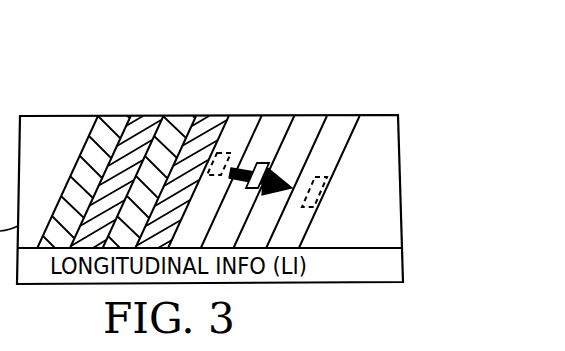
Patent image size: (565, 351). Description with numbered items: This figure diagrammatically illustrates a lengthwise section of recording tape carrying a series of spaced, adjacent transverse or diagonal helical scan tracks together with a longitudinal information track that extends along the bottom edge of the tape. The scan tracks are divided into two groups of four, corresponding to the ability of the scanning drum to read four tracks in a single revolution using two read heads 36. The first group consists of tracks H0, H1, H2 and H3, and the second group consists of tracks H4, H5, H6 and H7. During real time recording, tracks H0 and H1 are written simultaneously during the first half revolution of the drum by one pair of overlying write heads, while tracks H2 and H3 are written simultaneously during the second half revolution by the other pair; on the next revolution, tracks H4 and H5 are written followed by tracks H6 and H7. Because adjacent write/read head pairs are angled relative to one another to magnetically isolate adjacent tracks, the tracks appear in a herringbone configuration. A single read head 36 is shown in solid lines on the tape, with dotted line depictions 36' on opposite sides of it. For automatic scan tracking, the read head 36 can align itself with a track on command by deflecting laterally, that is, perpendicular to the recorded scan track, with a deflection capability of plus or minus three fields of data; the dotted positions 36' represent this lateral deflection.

The read head 36 is at (288, 203).
The dotted line depiction of read head 36' is at (294, 198).
The scan track H0 is at (115, 120).
The scan track H1 is at (147, 120).
The scan track H2 is at (176, 120).
The scan track H3 is at (208, 120).
The scan track H4 is at (249, 128).
The scan track H5 is at (280, 128).
The scan track H6 is at (309, 128).
The scan track H7 is at (340, 128).